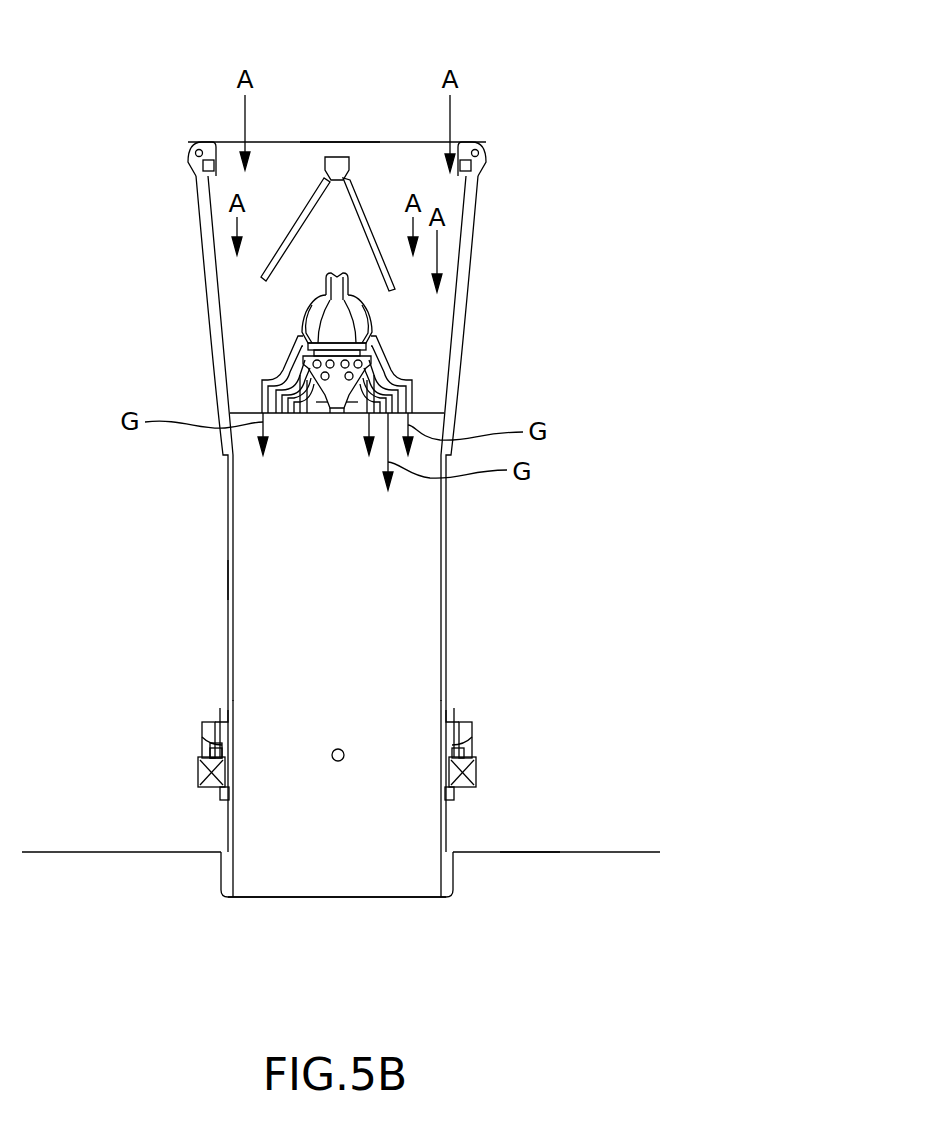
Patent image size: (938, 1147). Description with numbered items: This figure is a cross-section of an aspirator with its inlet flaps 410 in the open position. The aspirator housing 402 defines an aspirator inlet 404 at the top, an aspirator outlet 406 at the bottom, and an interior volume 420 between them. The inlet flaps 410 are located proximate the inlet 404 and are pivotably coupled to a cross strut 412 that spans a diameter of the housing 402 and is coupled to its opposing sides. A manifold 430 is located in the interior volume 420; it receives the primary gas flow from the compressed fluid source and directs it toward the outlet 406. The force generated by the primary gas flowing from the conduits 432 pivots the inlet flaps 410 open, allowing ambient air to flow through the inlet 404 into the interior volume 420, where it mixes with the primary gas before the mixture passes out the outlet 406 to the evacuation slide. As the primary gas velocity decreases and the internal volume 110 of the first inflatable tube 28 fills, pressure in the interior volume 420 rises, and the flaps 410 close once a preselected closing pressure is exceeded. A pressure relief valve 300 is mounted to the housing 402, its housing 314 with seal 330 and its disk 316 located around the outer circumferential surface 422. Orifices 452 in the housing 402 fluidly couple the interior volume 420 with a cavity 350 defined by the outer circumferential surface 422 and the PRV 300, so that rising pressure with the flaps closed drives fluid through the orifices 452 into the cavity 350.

The aspirator inlet 404 is at (385, 138).
The cross strut 412 is at (338, 150).
The inlet flaps 410 is at (280, 248).
The manifold 430 is at (422, 386).
The conduits 432 is at (296, 420).
The aspirator housing 402 is at (228, 520).
The outer circumferential surface 422 is at (228, 575).
The interior volume 420 is at (337, 633).
The aspirator outlet 406 is at (256, 908).
The pressure relief valve (PRV) 300 is at (184, 740).
The cavity 350 is at (220, 722).
The orifices 452 is at (236, 755).
The housing 314 is at (462, 715).
The seal 330 is at (478, 752).
The disk 316 is at (472, 787).
The first inflatable tube 28 is at (580, 851).
The internal volume 110 is at (532, 890).